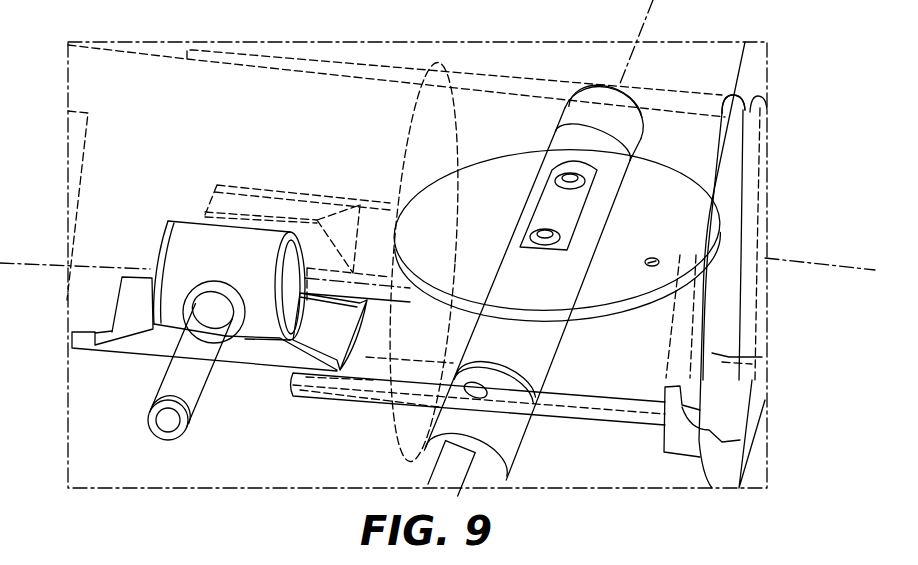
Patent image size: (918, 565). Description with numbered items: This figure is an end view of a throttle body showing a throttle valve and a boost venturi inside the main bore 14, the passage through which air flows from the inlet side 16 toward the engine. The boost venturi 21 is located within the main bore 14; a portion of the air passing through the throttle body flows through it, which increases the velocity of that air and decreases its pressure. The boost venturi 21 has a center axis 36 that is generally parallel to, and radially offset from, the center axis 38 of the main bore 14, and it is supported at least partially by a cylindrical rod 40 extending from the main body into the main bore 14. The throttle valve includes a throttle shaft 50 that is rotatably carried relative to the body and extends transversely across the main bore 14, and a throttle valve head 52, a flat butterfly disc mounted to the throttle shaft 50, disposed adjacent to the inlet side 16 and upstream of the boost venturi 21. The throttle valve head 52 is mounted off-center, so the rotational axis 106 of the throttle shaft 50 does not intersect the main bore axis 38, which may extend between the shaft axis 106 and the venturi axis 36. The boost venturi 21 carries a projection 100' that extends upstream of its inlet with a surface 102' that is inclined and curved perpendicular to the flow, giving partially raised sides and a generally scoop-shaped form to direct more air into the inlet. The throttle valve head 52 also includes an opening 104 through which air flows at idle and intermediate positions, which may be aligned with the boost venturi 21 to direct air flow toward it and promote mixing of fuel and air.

The main bore 14 is at (258, 0).
The inlet side 16 is at (748, 117).
The boost venturi 21 is at (190, 237).
The center axis 36 is at (41, 264).
The center axis 38 is at (850, 263).
The rod 40 is at (197, 382).
The throttle shaft 50 is at (503, 428).
The throttle valve head 52 is at (660, 215).
The projection 100' is at (204, 365).
The surface 102' is at (351, 373).
The opening 104 is at (658, 260).
The rotational axis 106 is at (660, 2).